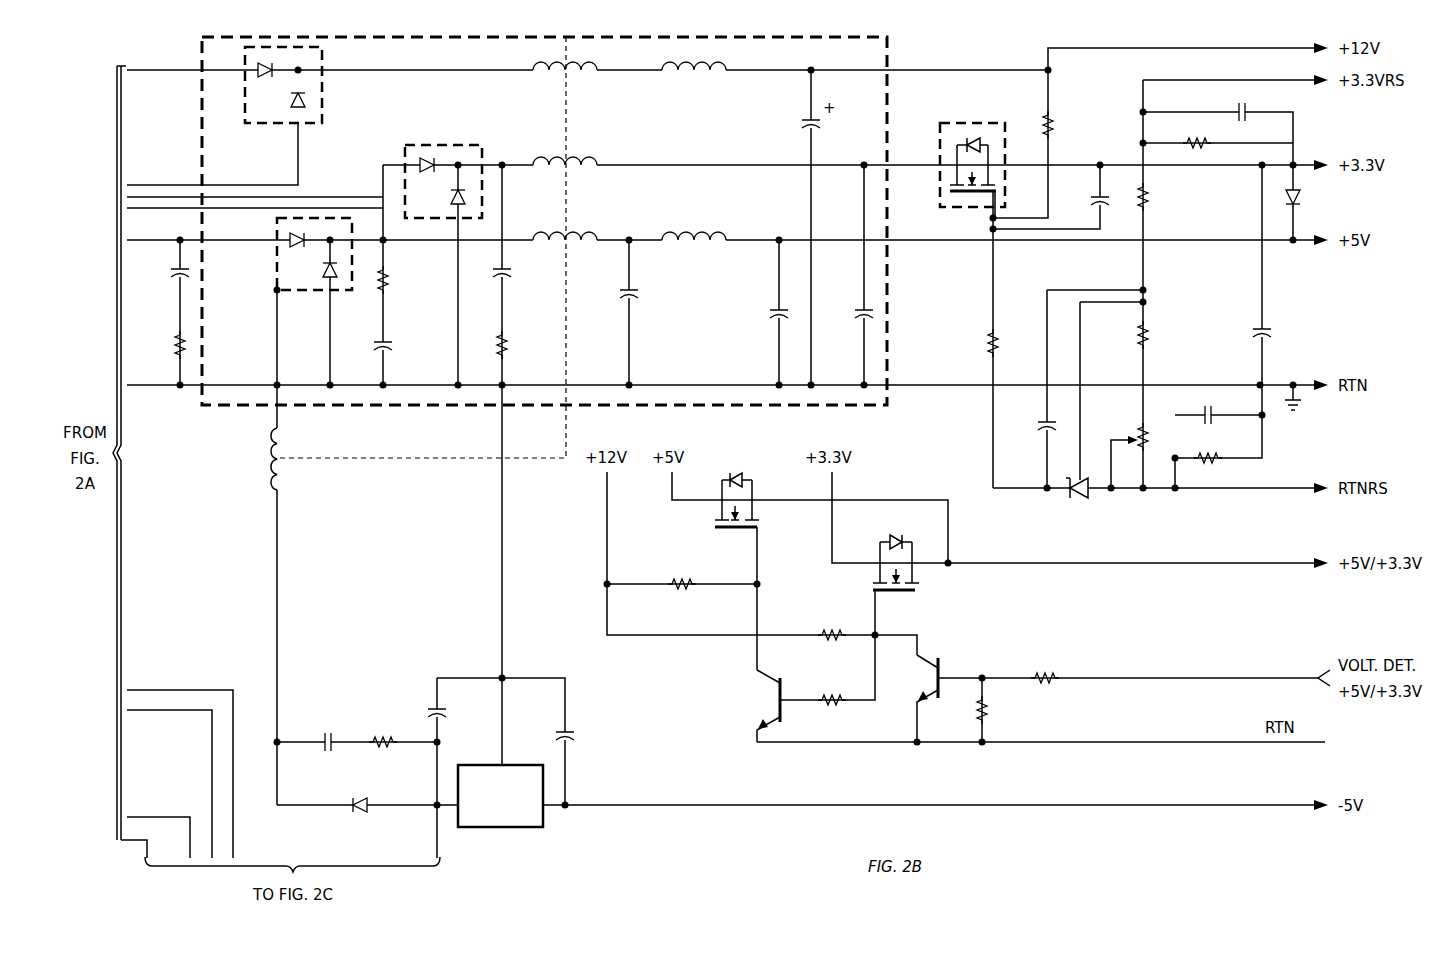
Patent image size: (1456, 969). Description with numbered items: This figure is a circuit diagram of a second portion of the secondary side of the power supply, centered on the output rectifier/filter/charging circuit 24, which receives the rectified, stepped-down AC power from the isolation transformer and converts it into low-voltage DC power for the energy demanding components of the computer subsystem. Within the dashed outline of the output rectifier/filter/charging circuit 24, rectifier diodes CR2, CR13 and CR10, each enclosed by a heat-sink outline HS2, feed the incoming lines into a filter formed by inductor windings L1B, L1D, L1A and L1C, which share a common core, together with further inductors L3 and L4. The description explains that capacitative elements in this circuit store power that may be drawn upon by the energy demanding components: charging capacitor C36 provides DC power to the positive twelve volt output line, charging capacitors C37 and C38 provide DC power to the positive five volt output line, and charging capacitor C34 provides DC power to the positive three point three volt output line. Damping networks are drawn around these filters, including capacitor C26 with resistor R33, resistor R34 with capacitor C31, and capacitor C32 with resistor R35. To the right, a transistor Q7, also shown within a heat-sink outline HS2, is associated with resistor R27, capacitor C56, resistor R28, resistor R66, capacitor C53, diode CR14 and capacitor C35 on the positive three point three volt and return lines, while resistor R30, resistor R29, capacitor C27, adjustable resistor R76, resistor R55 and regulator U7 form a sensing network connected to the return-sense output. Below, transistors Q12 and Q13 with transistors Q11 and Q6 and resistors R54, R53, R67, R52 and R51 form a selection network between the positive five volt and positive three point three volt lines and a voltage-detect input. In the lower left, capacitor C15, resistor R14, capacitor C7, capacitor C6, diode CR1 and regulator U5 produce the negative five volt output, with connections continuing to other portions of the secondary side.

The output rectifier/filter/charging circuit 24 is at (889, 69).
The heat sink HS2 is at (625, 181).
The rectifier diode CR2 is at (308, 77).
The rectifier diode CR13 is at (442, 163).
The rectifier diode CR10 is at (281, 248).
The inductor winding L1B is at (546, 59).
The inductor L3 is at (705, 59).
The inductor winding L1D is at (582, 154).
The inductor winding L1A is at (582, 229).
The inductor L4 is at (705, 229).
The inductor winding L1C is at (249, 459).
The charging capacitor C36 is at (796, 113).
The capacitor C26 is at (163, 273).
The resistor R33 is at (160, 345).
The resistor R34 is at (400, 280).
The capacitor C31 is at (401, 346).
The capacitor C32 is at (519, 273).
The resistor R35 is at (518, 345).
The charging capacitor C37 is at (647, 294).
The charging capacitor C38 is at (760, 316).
The charging capacitor C34 is at (849, 301).
The MOSFET transistor Q7 is at (973, 159).
The resistor R27 is at (1064, 125).
The capacitor C56 is at (1083, 201).
The resistor R28 is at (1160, 197).
The resistor R66 is at (1193, 133).
The capacitor C53 is at (1260, 105).
The diode CR14 is at (1315, 198).
The capacitor C35 is at (1276, 324).
The resistor R30 is at (973, 343).
The resistor R29 is at (1160, 335).
The capacitor C27 is at (1033, 417).
The potentiometer R76 is at (1124, 435).
The resistor R55 is at (1222, 434).
The shunt regulator U7 is at (1077, 501).
The MOSFET transistor Q12 is at (737, 488).
The MOSFET transistor Q13 is at (896, 552).
The transistor Q11 is at (756, 703).
The transistor Q6 is at (918, 679).
The resistor R54 is at (679, 576).
The resistor R53 is at (829, 627).
The resistor R67 is at (829, 692).
The resistor R52 is at (1045, 670).
The resistor R51 is at (998, 710).
The capacitor C15 is at (307, 736).
The resistor R14 is at (381, 734).
The capacitor C7 is at (450, 713).
The capacitor C6 is at (574, 725).
The diode CR1 is at (341, 797).
The voltage regulator U5 is at (500, 785).